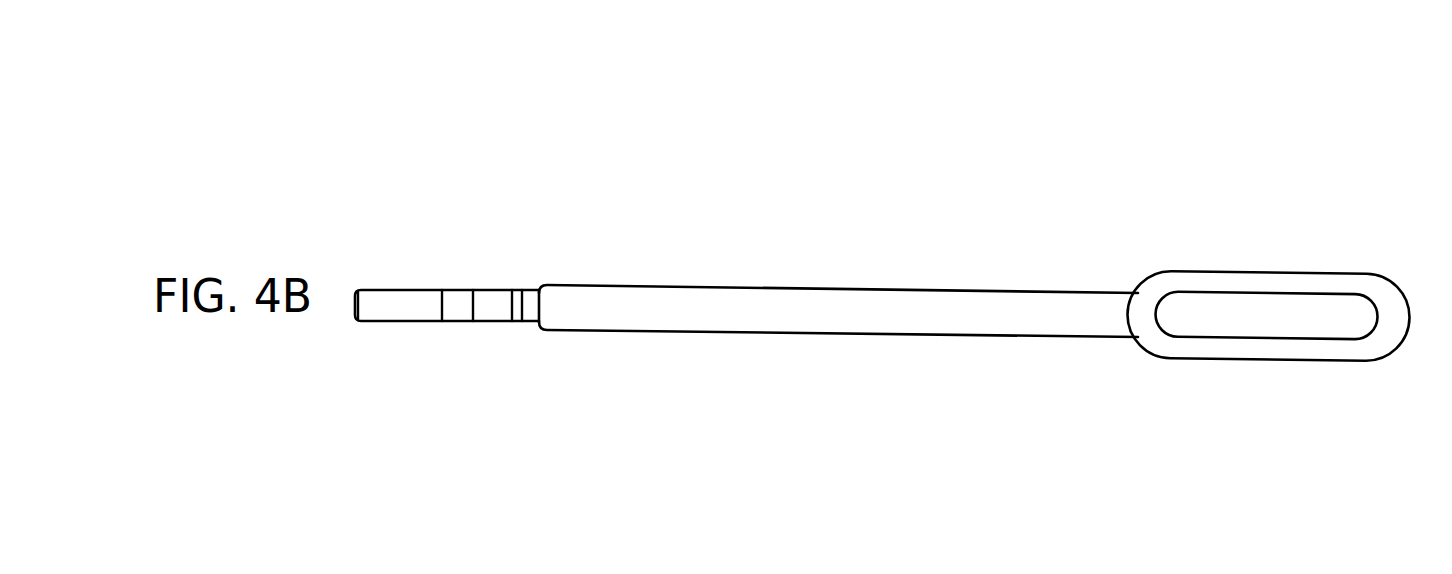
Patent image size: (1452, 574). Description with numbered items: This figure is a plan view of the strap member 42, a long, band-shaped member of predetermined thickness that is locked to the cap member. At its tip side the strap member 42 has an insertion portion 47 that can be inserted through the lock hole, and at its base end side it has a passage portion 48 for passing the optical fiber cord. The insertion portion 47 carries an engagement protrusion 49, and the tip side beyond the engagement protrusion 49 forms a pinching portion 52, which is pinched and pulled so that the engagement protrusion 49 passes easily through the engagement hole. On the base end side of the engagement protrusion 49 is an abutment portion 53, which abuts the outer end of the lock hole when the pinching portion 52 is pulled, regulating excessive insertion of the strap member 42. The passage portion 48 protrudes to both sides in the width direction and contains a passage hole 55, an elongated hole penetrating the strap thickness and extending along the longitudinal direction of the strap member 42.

The strap member 42 is at (926, 188).
The insertion portion 47 is at (437, 298).
The passage portion 48 is at (1263, 285).
The engagement protrusion 49 is at (452, 307).
The pinching portion 52 is at (388, 305).
The abutment portion 53 is at (517, 297).
The passage hole 55 is at (1268, 320).